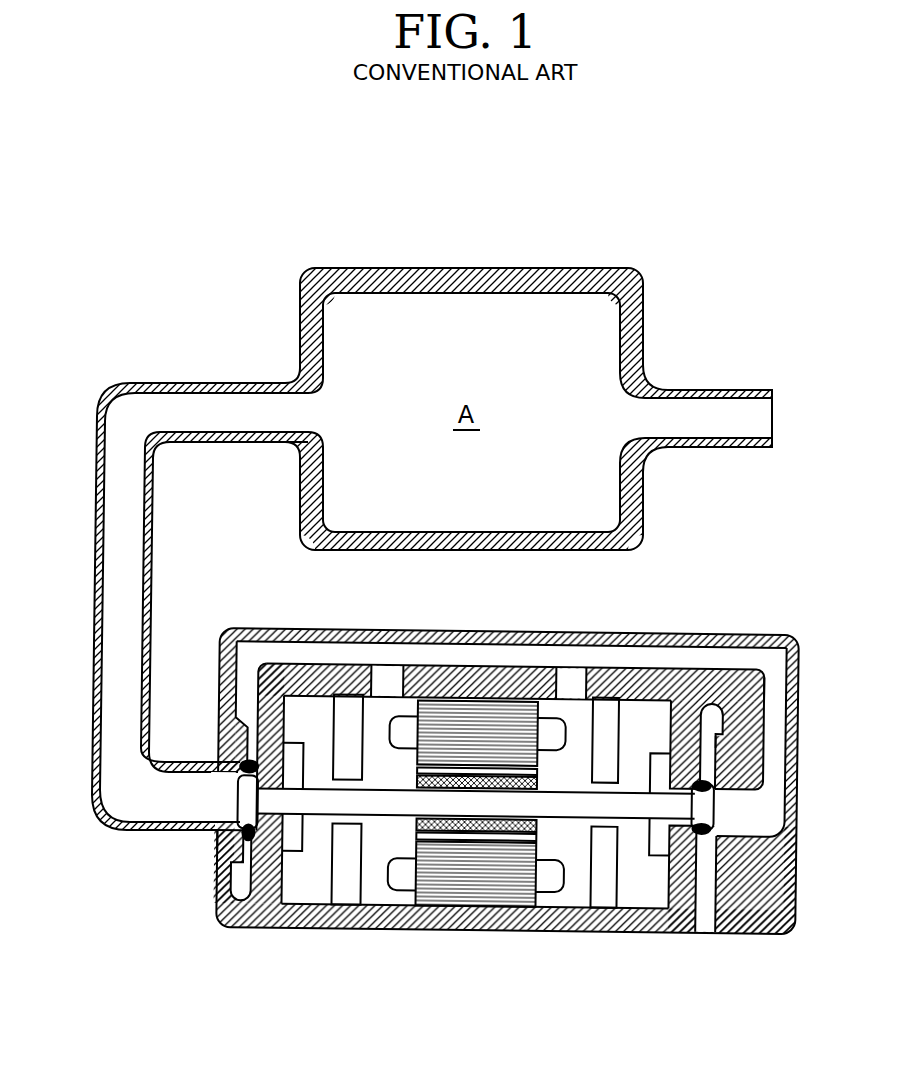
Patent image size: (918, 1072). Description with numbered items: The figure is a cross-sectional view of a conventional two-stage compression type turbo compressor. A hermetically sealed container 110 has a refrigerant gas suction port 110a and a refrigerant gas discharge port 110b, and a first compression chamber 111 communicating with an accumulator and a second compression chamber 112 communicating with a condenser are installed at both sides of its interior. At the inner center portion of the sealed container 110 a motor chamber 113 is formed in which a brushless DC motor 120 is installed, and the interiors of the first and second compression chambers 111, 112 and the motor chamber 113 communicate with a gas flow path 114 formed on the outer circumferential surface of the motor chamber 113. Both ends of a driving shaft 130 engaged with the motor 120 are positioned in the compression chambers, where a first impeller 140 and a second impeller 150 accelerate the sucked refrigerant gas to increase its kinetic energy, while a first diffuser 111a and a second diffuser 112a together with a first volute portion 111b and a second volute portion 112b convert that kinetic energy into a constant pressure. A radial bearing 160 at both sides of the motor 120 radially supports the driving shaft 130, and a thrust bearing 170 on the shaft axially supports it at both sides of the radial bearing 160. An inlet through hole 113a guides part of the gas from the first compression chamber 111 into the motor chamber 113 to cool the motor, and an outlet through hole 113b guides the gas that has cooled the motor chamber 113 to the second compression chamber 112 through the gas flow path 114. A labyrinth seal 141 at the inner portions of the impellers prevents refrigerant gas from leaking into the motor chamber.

The hermetically sealed container 110 is at (386, 942).
The refrigerant gas suction port 110a is at (135, 800).
The refrigerant gas discharge port 110b is at (707, 915).
The first compression chamber 111 is at (218, 795).
The first diffuser 111a is at (214, 887).
The first volute portion 111b is at (243, 895).
The second compression chamber 112 is at (736, 800).
The second diffuser 112a is at (704, 746).
The second volute portion 112b is at (712, 712).
The motor chamber 113 is at (306, 678).
The inlet through hole 113a is at (388, 676).
The outlet through hole 113b is at (573, 676).
The gas flow path 114 is at (506, 652).
The brushless DC motor 120 is at (507, 912).
The driving shaft 130 is at (396, 808).
The first impeller 140 is at (203, 827).
The seal (Labyrinth seal) 141 is at (252, 762).
The second impeller 150 is at (709, 812).
The radial bearing 160 is at (352, 862).
The thrust bearing 170 is at (296, 850).